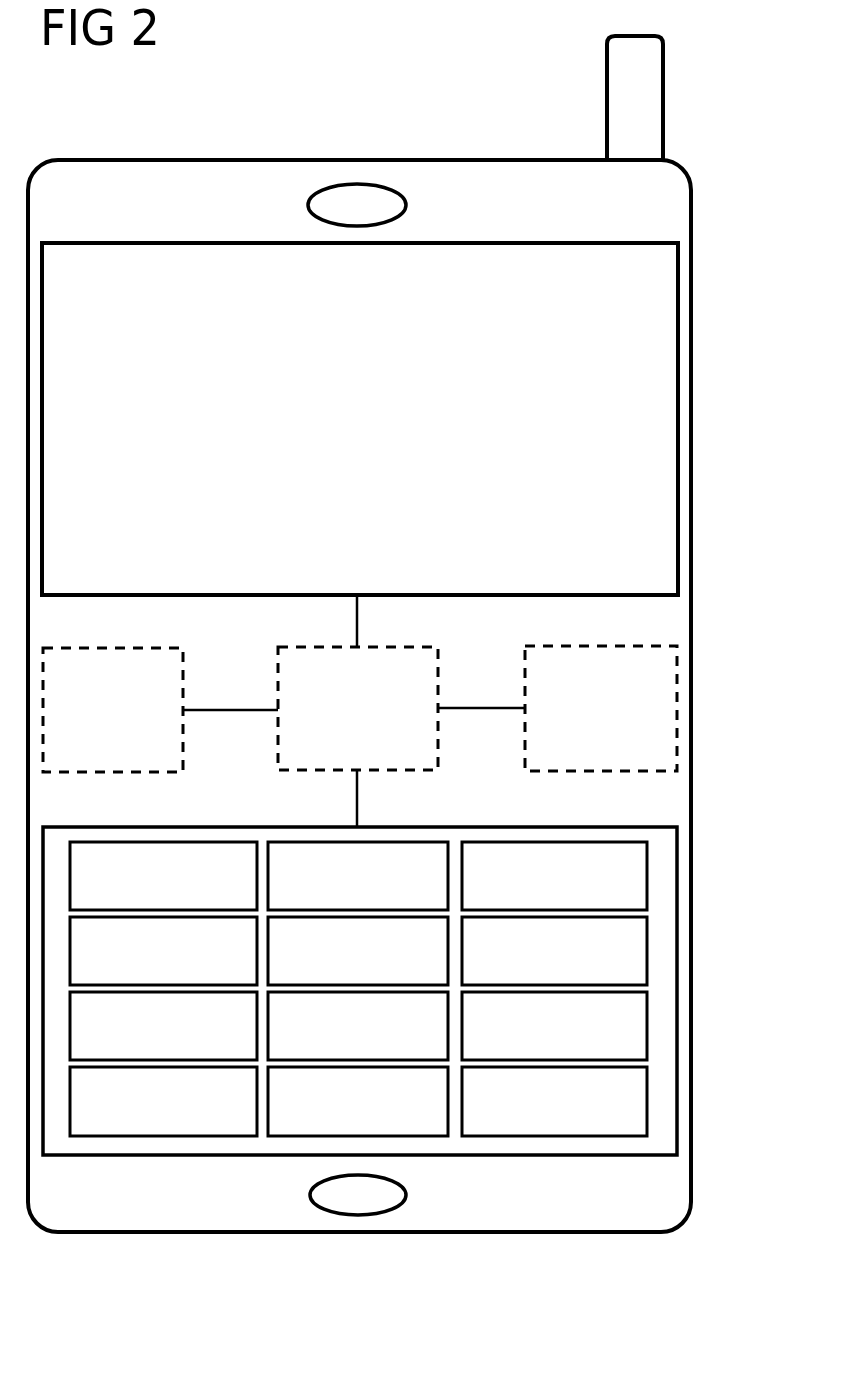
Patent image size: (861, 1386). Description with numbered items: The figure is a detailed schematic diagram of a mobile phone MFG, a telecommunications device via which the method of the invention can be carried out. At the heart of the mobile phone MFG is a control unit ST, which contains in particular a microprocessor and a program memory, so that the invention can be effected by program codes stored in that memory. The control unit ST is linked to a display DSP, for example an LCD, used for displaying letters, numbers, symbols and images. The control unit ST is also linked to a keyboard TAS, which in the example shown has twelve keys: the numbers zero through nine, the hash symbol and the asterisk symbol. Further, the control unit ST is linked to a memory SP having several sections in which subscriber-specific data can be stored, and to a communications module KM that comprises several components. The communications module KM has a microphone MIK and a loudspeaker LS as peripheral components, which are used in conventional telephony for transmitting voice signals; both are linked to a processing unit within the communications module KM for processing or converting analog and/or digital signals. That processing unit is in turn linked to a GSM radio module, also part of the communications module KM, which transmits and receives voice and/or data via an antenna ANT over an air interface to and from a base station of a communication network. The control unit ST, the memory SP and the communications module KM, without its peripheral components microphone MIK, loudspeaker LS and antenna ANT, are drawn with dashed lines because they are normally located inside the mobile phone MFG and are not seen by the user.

The mobile phone MFG is at (558, 1248).
The antenna ANT is at (607, 58).
The loudspeaker LS is at (358, 183).
The display DSP is at (486, 243).
The memory SP is at (183, 745).
The control unit ST is at (438, 745).
The communications module KM is at (524, 666).
The keyboard TAS is at (161, 1155).
The microphone MIK is at (356, 1215).